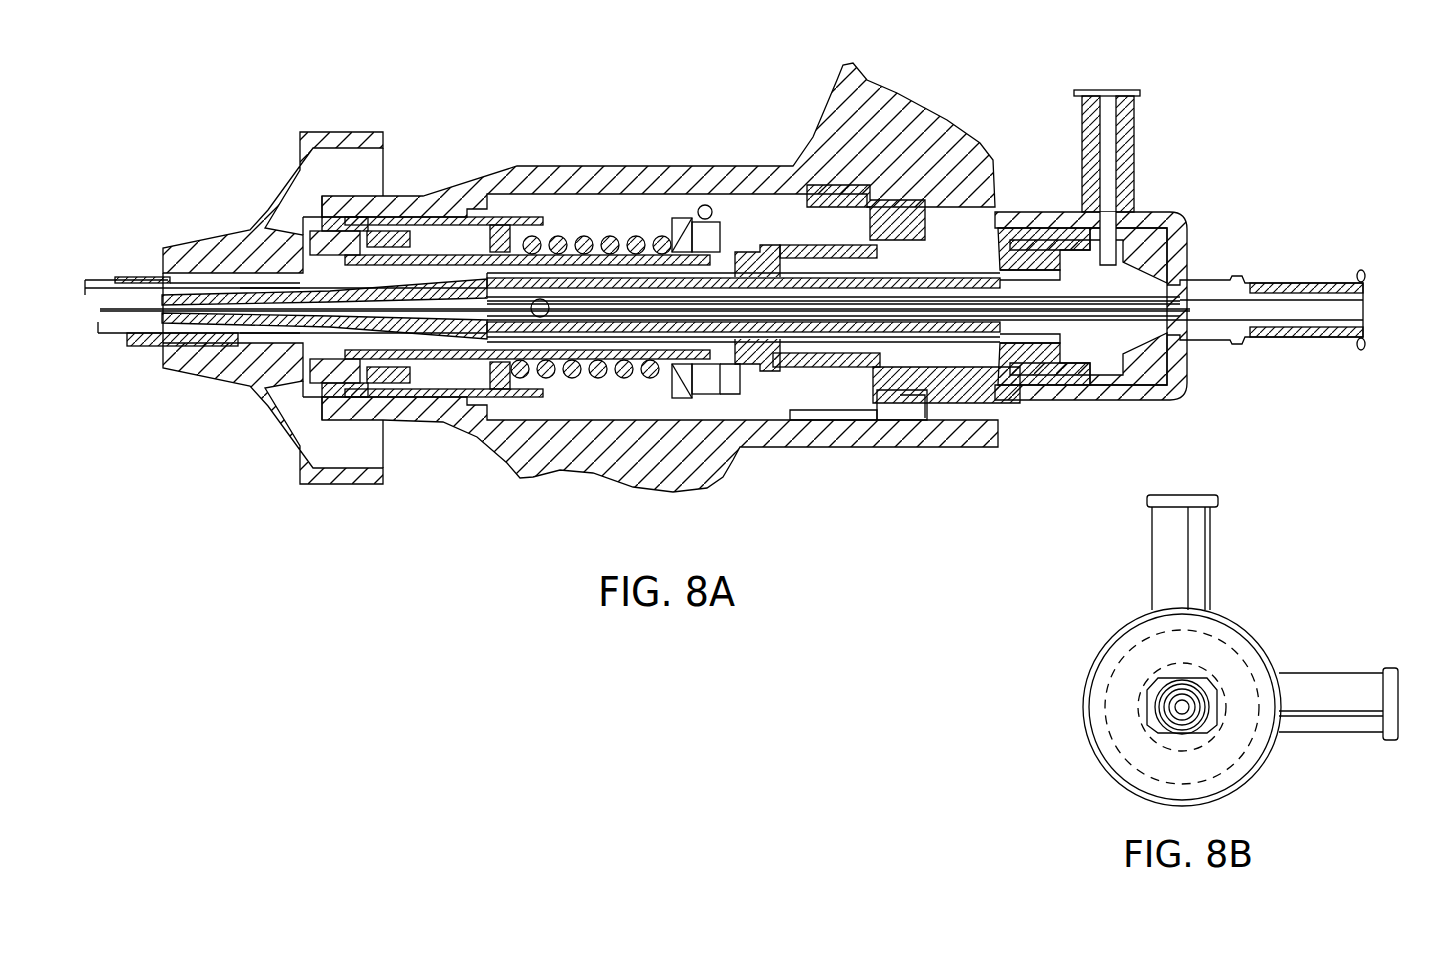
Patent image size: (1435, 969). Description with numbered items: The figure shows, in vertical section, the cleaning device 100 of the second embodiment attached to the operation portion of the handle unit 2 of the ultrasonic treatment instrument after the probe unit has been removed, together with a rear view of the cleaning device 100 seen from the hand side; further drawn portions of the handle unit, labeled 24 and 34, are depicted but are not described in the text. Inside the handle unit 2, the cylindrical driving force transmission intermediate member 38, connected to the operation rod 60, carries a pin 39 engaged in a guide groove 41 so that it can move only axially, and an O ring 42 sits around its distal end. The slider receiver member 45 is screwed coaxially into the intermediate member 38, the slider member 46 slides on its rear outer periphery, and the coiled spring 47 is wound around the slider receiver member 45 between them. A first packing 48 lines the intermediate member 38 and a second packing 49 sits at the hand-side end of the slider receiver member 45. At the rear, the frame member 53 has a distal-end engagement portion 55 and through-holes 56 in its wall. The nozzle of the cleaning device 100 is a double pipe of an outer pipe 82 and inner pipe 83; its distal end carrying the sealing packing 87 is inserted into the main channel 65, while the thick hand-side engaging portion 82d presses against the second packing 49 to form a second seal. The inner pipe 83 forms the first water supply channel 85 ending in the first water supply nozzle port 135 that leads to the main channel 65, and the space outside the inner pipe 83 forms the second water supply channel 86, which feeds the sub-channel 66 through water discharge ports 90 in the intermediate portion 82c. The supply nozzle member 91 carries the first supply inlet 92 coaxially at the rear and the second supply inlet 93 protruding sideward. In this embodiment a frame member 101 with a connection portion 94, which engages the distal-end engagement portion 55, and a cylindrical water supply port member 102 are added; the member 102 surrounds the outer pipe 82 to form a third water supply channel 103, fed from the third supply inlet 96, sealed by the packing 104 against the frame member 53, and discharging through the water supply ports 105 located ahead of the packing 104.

In FIG. 8A, the handle unit 2 is at (462, 148).
In FIG. 8A, the ball 24 is at (707, 204).
In FIG. 8A, the wing 34 is at (348, 130).
In FIG. 8A, the driving force transmission intermediate member 38 is at (392, 385).
In FIG. 8A, the pin 39 is at (502, 225).
In FIG. 8A, the guide groove 41 is at (480, 216).
In FIG. 8A, the O ring 42 is at (333, 385).
In FIG. 8A, the slider receiver member 45 is at (412, 218).
In FIG. 8A, the slider member 46 is at (700, 396).
In FIG. 8A, the coiled spring 47 is at (600, 380).
In FIG. 8A, the first packing 48 is at (332, 230).
In FIG. 8A, the second packing 49 is at (700, 375).
In FIG. 8A, the frame member 53 is at (875, 384).
In FIG. 8A, the distal-end engagement portion 55 is at (905, 420).
In FIG. 8A, the through-holes 56 is at (882, 420).
In FIG. 8A, the operation rod 60 is at (145, 277).
In FIG. 8A, the main channel 65 is at (100, 334).
In FIG. 8A, the sub-channel 66 is at (97, 278).
In FIG. 8A, the outer pipe 82 is at (448, 362).
In FIG. 8A, the intermediate portion 82c is at (676, 254).
In FIG. 8A, the engaging portion 82d is at (728, 396).
In FIG. 8A, the inner pipe 83 is at (566, 330).
In FIG. 8A, the first water supply channel 85 is at (590, 296).
In FIG. 8A, the second water supply channel 86 is at (618, 277).
In FIG. 8A, the packing for sealing 87 is at (180, 350).
In FIG. 8A, the water discharge port 90 is at (552, 256).
In FIG. 8A, the supply nozzle member 91 is at (1122, 380).
In FIG. 8A, the first supply inlet 92 is at (1332, 338).
In FIG. 8B, the first supply inlet 92 is at (1155, 712).
In FIG. 8A, the second supply inlet 93 is at (1136, 132).
In FIG. 8B, the second supply inlet 93 is at (1200, 527).
In FIG. 8A, the connection portion 94 is at (900, 200).
In FIG. 8B, the third supply inlet 96 is at (1348, 690).
In FIG. 8A, the cleaning device 100 is at (1210, 166).
In FIG. 8B, the cleaning device 100 is at (1082, 638).
In FIG. 8A, the frame member 101 is at (1025, 212).
In FIG. 8A, the water supply port member 102 is at (755, 252).
In FIG. 8A, the third water supply channel 103 is at (792, 416).
In FIG. 8A, the packing 104 is at (1000, 405).
In FIG. 8A, the water supply ports 105 is at (828, 246).
In FIG. 8A, the first water supply nozzle port 135 is at (142, 348).